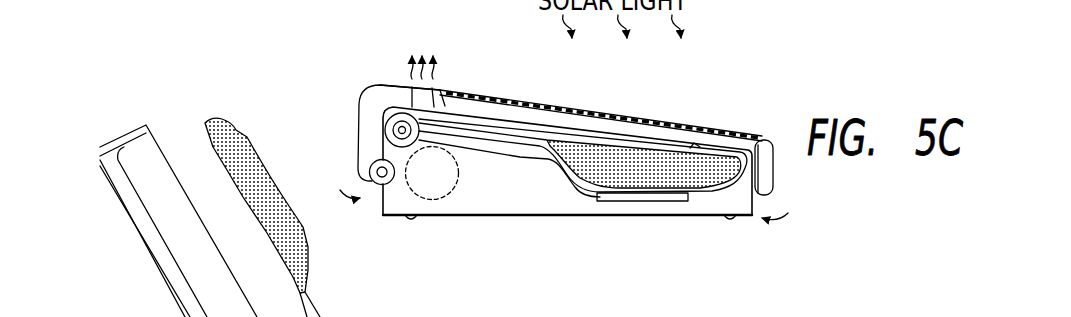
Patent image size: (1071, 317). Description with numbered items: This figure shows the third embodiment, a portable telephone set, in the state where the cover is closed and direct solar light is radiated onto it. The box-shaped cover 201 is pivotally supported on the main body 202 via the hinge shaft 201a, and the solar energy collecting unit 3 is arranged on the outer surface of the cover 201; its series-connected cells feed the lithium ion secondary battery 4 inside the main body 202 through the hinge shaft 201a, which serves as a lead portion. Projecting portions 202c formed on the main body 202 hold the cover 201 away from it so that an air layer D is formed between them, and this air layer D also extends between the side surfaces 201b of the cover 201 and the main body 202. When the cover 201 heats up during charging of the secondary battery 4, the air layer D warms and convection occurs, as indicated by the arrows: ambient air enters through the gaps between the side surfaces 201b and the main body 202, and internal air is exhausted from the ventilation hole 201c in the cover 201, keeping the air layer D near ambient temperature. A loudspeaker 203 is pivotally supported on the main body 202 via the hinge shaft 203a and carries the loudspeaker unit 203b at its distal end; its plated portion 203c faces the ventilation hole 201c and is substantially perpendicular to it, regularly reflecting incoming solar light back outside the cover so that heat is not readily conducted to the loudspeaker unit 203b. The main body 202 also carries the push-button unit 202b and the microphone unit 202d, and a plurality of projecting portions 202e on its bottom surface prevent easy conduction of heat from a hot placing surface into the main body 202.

The cover 201 is at (603, 113).
The hinge shaft 201a is at (382, 180).
The side surfaces 201b is at (368, 124).
The ventilation hole 201c is at (440, 90).
The main body 202 is at (680, 210).
The push-button unit 202b is at (534, 160).
The projecting portions 202c is at (698, 143).
The microphone unit 202d is at (639, 201).
The projecting portions 202e is at (415, 220).
The loudspeaker 203 is at (235, 123).
The hinge shaft 203a is at (400, 126).
The loudspeaker unit 203b is at (227, 148).
The plated portion 203c is at (453, 108).
The solar energy collecting unit 3 is at (640, 117).
The lithium ion secondary battery 4 is at (457, 203).
The air layer D is at (520, 118).